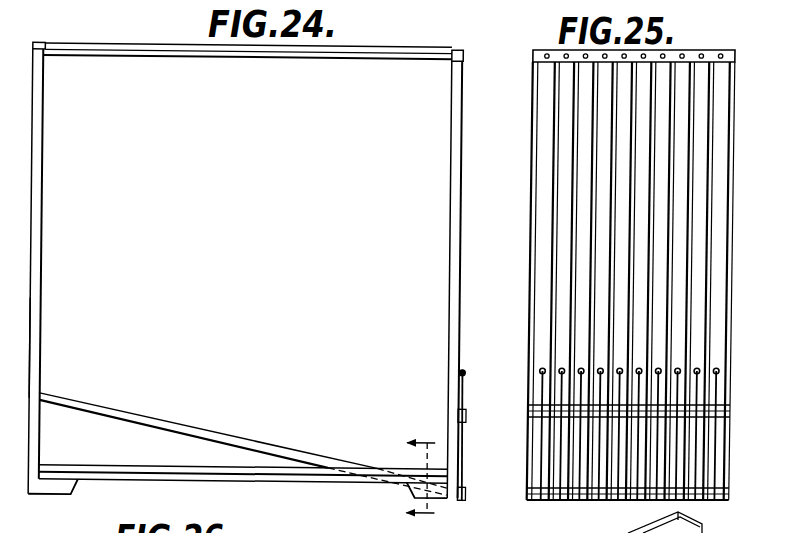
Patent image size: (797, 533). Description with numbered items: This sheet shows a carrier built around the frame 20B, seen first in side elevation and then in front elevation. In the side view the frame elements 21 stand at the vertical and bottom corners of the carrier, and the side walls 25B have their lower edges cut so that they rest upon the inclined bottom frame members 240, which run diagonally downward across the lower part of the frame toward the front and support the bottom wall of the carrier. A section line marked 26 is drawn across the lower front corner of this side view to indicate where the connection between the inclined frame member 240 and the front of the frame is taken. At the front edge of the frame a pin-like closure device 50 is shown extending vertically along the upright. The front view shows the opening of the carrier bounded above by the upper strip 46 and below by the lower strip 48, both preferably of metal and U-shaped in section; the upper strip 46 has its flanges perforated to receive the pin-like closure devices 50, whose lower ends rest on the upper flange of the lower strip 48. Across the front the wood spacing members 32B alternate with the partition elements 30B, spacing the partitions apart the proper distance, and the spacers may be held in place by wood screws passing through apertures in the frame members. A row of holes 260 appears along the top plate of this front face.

In FIG. 24, the frame 20B is at (452, 243).
In FIG. 24, the frame elements 21 is at (41, 372).
In FIG. 24, the side walls 25B is at (424, 159).
In FIG. 24, the inclined bottom frame members 240 is at (180, 425).
In FIG. 24, the closure devices 50 is at (466, 386).
In FIG. 24, the section line 26- 26 is at (419, 475).
In FIG. 25, the holes in top plate 260 is at (566, 58).
In FIG. 25, the spacing members 32B is at (720, 253).
In FIG. 25, the partition elements 30B is at (707, 312).
In FIG. 25, the upper strip 46 is at (722, 407).
In FIG. 25, the lower strip 48 is at (720, 501).